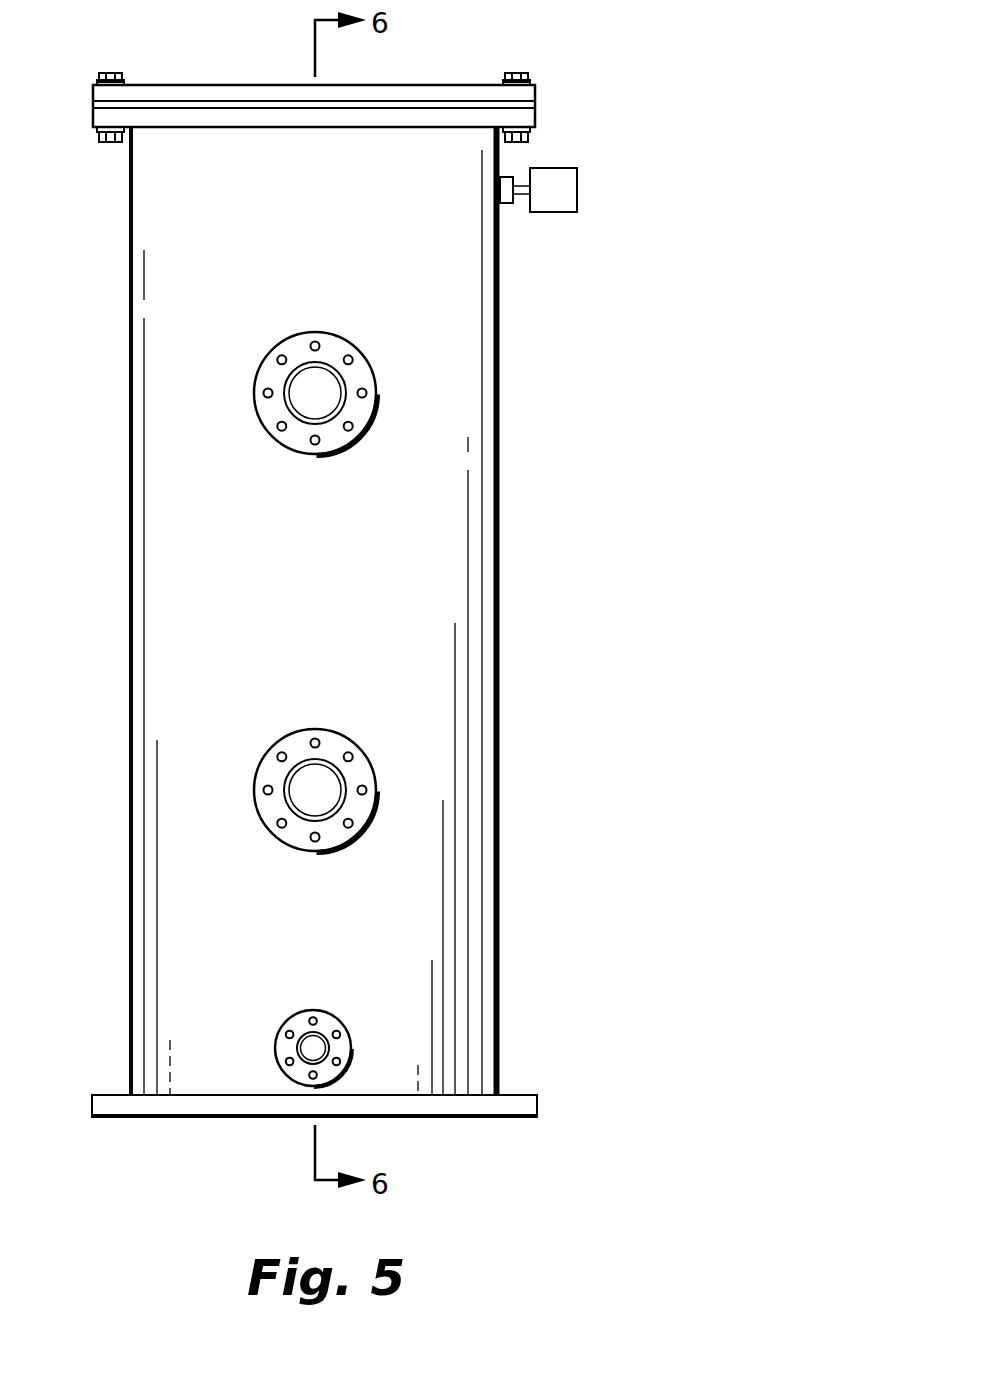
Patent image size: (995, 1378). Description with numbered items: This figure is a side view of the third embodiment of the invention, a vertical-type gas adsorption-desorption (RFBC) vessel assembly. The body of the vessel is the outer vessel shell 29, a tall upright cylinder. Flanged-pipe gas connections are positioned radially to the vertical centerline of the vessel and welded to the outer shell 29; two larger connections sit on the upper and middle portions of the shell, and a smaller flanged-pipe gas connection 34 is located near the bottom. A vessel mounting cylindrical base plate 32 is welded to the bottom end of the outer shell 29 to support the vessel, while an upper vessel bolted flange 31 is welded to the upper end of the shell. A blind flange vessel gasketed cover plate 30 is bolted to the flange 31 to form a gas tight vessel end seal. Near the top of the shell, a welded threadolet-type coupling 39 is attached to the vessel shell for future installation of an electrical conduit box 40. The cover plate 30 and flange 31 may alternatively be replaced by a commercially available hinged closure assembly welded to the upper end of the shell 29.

The outer vessel shell 29 is at (500, 556).
The blind flange vessel gasketed cover plate 30 is at (536, 88).
The upper vessel bolted flange 31 is at (536, 112).
The vessel mounting cylindrical base plate 32 is at (513, 1093).
The flanged-pipe gas connection 34 is at (350, 1033).
The welded threadolet-type coupling 39 is at (505, 204).
The electrical conduit box 40 is at (578, 178).